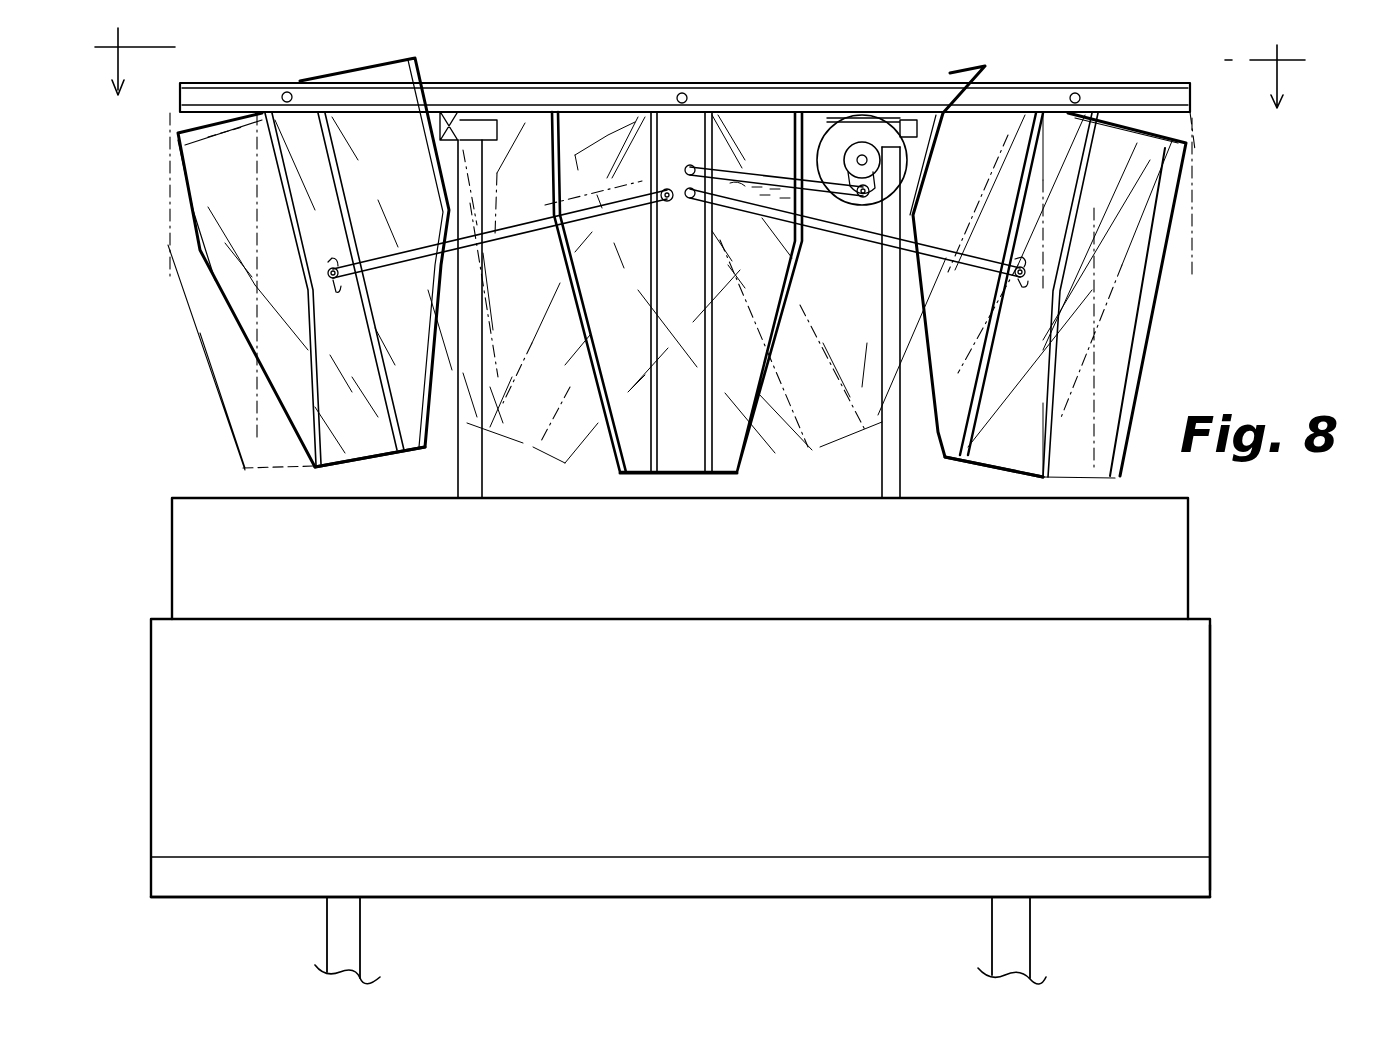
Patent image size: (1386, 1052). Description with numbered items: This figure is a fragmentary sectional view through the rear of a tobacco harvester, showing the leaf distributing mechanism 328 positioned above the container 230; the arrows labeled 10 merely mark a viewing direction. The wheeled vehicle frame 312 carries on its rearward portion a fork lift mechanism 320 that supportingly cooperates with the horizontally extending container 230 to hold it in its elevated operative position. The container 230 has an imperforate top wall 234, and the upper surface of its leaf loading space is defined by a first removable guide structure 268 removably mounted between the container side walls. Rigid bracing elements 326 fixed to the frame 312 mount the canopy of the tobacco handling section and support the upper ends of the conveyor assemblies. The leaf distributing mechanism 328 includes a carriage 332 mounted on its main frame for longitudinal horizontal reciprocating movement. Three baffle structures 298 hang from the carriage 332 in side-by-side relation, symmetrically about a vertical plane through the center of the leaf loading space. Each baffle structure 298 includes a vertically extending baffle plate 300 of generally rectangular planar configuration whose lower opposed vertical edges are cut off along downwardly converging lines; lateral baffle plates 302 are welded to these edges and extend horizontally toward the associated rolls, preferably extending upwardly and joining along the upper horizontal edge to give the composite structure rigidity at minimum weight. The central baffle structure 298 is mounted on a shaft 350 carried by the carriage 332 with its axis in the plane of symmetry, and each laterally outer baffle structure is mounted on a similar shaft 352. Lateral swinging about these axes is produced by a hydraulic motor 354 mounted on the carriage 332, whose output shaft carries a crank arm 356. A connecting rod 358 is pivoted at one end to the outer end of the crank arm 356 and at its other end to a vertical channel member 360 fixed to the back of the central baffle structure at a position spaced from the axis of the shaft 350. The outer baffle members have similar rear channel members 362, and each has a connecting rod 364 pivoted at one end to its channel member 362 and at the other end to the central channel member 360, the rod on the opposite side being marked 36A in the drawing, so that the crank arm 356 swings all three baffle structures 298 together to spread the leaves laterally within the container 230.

The section line 10 is at (700, 84).
The container 230 is at (1229, 623).
The imperforate top wall 234 is at (1175, 668).
The first removable guide structure 268 is at (198, 566).
The baffle structure 298 is at (416, 461).
The baffle plate 300 is at (172, 222).
The lateral baffle plates 302 is at (430, 405).
The wheeled vehicle frame 312 is at (1049, 940).
The fork lift mechanism 320 is at (1228, 882).
The rigid bracing elements 326 is at (484, 500).
The leaf distributing mechanism 328 is at (1216, 175).
The carriage 332 is at (532, 90).
The shaft 350 is at (702, 60).
The shaft 352 is at (290, 82).
The hydraulic motor 354 is at (905, 112).
The crank arm 356 is at (824, 152).
The connecting rod 358 is at (806, 202).
The vertical channel member 360 is at (668, 141).
The rear channel members 362 is at (318, 224).
The connecting rod 364 is at (504, 243).
The right connecting rod 36A is at (875, 247).